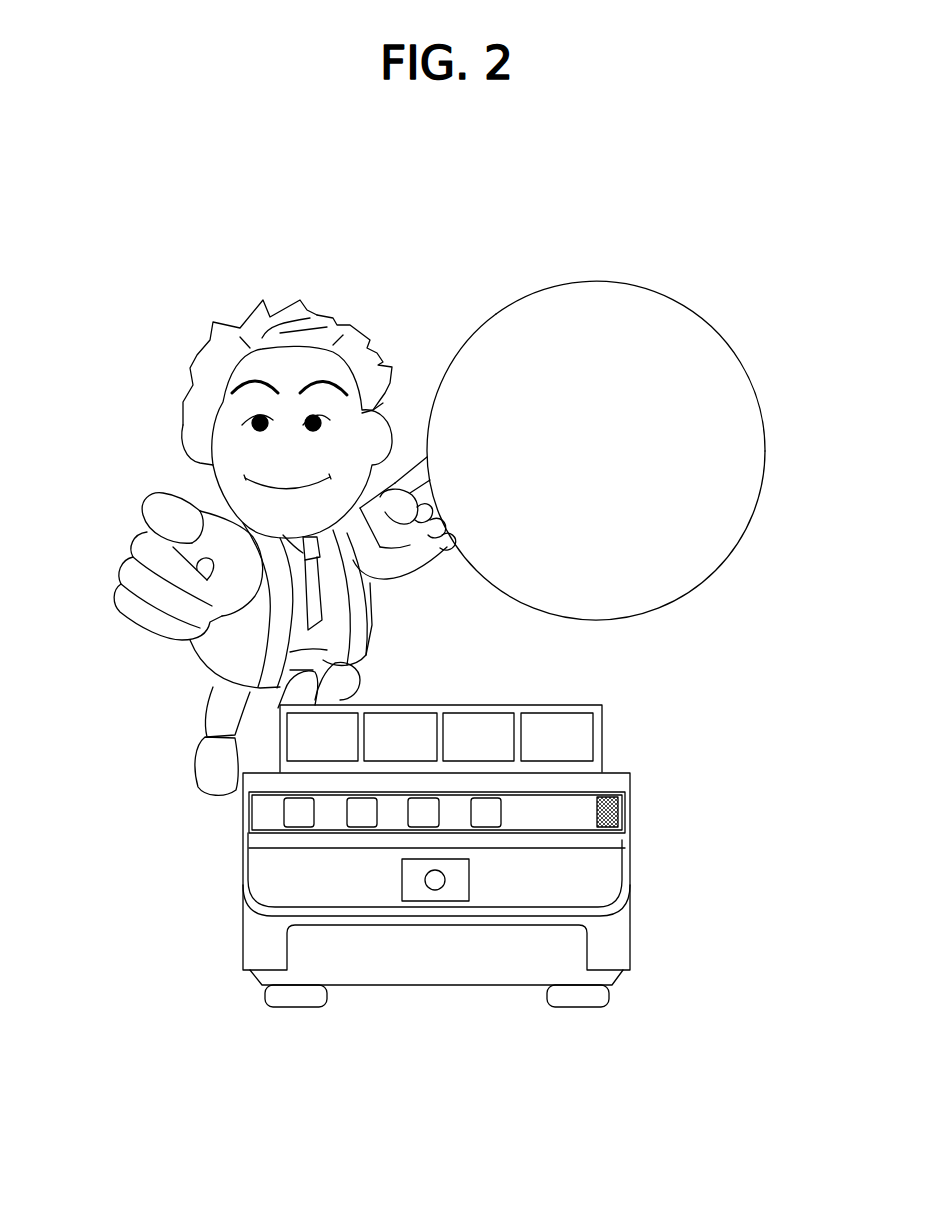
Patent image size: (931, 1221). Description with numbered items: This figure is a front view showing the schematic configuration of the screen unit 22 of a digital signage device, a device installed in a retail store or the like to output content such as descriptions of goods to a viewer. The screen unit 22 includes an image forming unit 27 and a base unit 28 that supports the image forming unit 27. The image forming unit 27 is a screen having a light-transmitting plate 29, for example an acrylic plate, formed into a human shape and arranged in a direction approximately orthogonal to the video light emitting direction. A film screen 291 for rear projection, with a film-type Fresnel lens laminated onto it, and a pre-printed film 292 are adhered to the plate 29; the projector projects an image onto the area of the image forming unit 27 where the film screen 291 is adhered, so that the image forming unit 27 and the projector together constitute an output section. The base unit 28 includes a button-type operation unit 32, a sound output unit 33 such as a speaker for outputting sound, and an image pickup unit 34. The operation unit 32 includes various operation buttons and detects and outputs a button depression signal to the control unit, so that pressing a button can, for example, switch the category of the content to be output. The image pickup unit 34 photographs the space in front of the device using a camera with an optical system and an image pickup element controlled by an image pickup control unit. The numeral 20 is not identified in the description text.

The screen unit 22 is at (294, 202).
The player character 20 is at (207, 652).
The image forming unit 27 is at (150, 393).
The pre-printed film 292 is at (328, 330).
The light-transmitting plate 29 is at (707, 338).
The film screen 291 is at (595, 305).
The base unit 28 is at (648, 876).
The operation unit 32 is at (472, 815).
The sound output unit 33 is at (612, 818).
The image pickup unit 34 is at (418, 893).